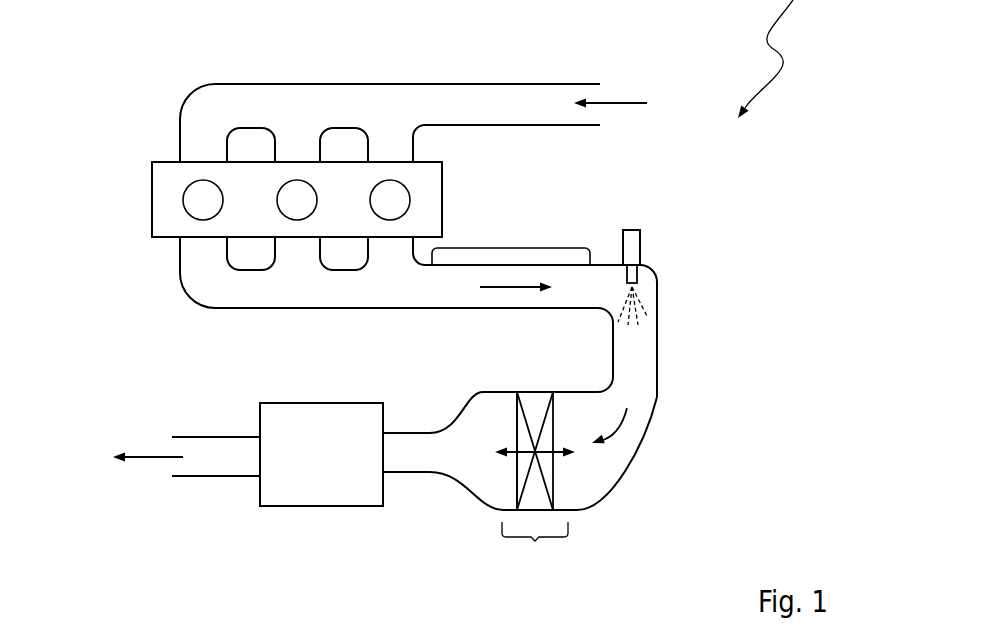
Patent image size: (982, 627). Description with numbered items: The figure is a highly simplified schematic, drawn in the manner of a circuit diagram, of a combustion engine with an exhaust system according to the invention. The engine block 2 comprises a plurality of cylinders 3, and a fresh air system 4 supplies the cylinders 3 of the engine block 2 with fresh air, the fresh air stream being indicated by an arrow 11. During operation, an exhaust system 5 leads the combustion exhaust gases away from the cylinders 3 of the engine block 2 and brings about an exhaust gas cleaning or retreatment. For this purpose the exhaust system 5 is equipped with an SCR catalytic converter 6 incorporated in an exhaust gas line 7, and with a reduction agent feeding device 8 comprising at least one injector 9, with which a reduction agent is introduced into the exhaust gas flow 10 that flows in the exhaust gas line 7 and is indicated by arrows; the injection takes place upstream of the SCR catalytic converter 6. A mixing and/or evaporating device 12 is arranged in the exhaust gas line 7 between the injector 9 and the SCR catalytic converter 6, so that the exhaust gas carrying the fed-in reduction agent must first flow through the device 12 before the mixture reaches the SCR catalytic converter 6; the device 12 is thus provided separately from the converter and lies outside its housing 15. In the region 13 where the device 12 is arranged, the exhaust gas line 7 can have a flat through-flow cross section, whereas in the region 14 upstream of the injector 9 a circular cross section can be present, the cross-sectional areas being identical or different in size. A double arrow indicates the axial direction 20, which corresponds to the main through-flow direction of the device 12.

The engine block 2 is at (146, 200).
The cylinders 3 is at (197, 211).
The fresh air system 4 is at (413, 78).
The exhaust system 5 is at (667, 322).
The SCR catalytic converter 6 is at (313, 466).
The exhaust gas line 7 is at (656, 400).
The reduction agent feeding device 8 is at (650, 244).
The injector 9 is at (633, 229).
The exhaust gas flow 10 is at (508, 291).
The arrow 11 is at (615, 100).
The mixing and/or evaporating device 12 is at (556, 430).
The region 13 is at (535, 541).
The region 14 is at (510, 247).
The housing 15 is at (323, 508).
The axial direction 20 is at (516, 430).